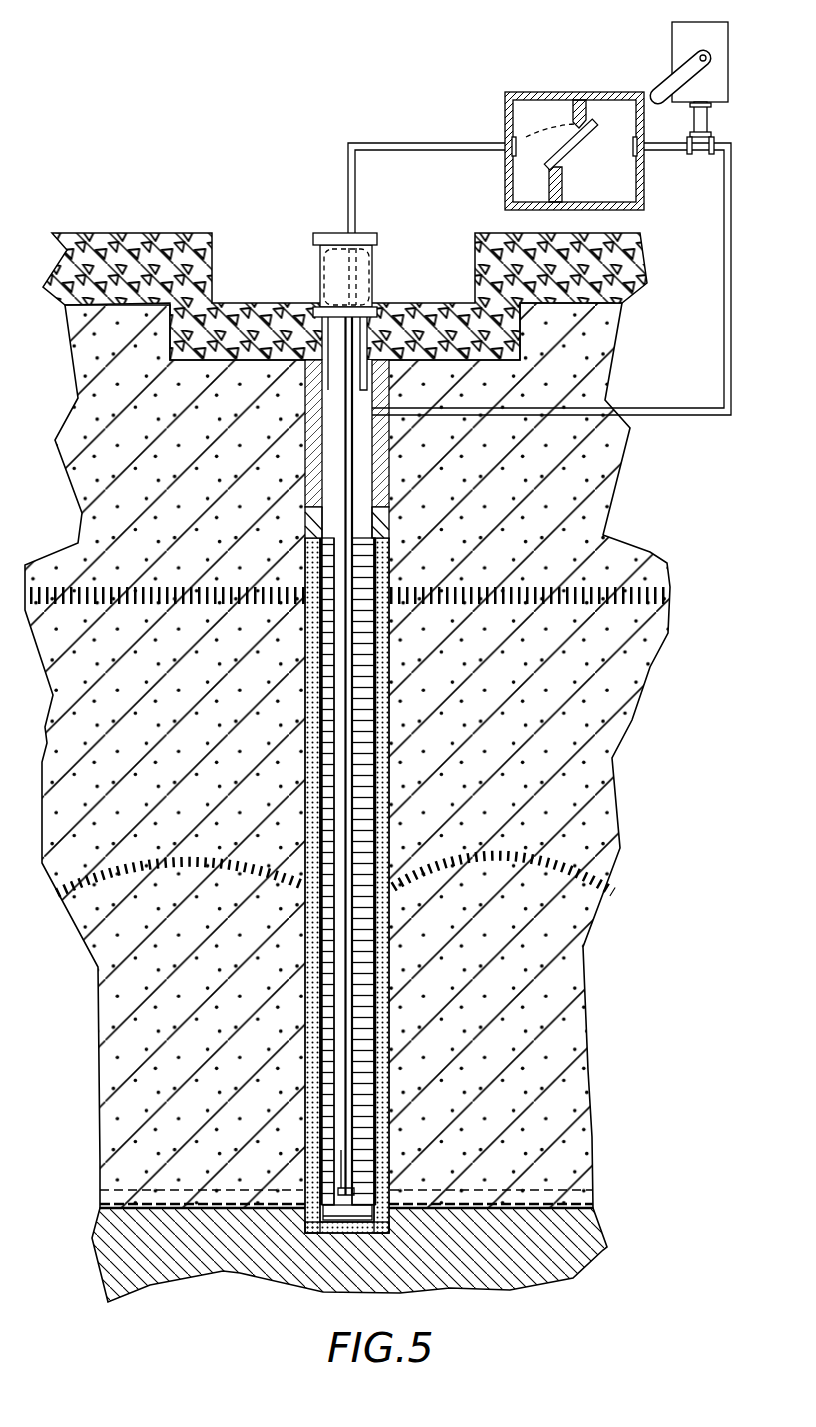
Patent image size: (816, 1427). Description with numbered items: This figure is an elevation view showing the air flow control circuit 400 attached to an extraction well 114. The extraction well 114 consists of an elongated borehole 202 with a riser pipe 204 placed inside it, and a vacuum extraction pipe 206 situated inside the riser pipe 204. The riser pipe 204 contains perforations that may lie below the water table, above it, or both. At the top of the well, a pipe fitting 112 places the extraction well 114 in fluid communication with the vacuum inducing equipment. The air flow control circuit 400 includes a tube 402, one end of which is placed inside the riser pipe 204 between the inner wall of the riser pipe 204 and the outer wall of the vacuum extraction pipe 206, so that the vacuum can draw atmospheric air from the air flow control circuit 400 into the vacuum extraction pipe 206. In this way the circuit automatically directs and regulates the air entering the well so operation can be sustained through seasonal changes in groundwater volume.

The air flow control circuit 400 is at (432, 89).
The pipe fitting 112 is at (332, 270).
The extraction well 114 is at (412, 649).
The elongated borehole 202 is at (305, 1060).
The riser pipe 204 is at (307, 627).
The vacuum extraction pipe 206 is at (340, 1042).
The tube 402 is at (346, 730).